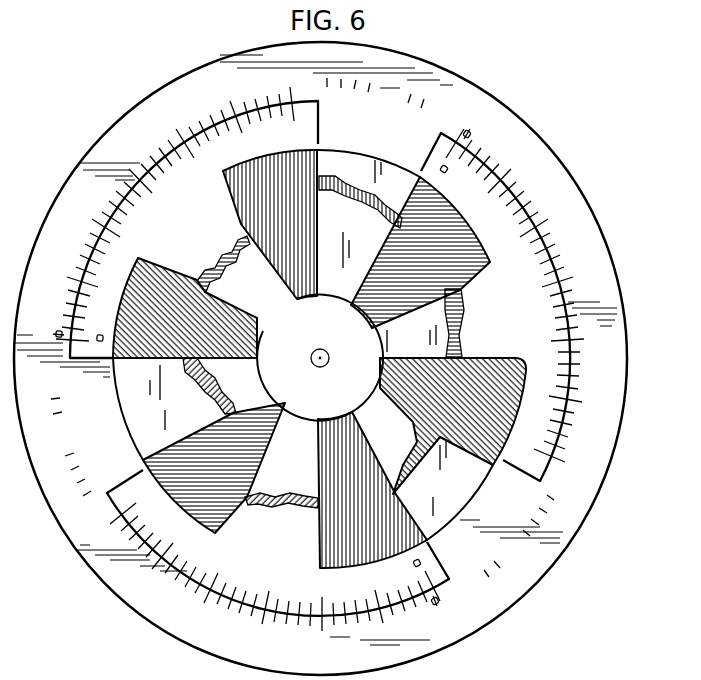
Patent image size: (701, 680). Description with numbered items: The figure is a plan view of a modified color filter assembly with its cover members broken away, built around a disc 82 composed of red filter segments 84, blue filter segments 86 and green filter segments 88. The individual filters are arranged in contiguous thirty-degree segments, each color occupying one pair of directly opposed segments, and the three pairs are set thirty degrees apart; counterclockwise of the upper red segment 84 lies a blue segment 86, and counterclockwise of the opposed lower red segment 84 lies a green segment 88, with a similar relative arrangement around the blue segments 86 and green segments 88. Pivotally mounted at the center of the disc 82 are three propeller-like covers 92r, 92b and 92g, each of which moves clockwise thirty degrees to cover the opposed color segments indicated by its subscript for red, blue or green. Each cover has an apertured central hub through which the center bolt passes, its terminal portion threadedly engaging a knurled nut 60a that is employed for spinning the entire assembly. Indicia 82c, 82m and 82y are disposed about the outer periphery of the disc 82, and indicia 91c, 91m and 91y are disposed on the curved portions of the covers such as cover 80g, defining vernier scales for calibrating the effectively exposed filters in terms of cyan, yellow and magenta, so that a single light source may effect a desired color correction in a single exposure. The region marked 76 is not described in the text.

The disc 82 is at (581, 178).
The indicia 82c is at (170, 137).
The indicia 82m is at (578, 357).
The indicia 82y is at (314, 624).
The indicia 91c is at (132, 200).
The indicia 91m is at (540, 311).
The indicia 91y is at (222, 577).
The propeller-like cover 92r is at (210, 250).
The propeller-like cover 92g is at (510, 309).
The propeller-like cover 92b is at (310, 463).
The cover 80g is at (430, 350).
The filter sector 76 is at (146, 360).
The red filter segment 84 is at (303, 246).
The blue filter segment 86 is at (406, 290).
The green filter segment 88 is at (416, 391).
The knurled nut 60a is at (322, 349).